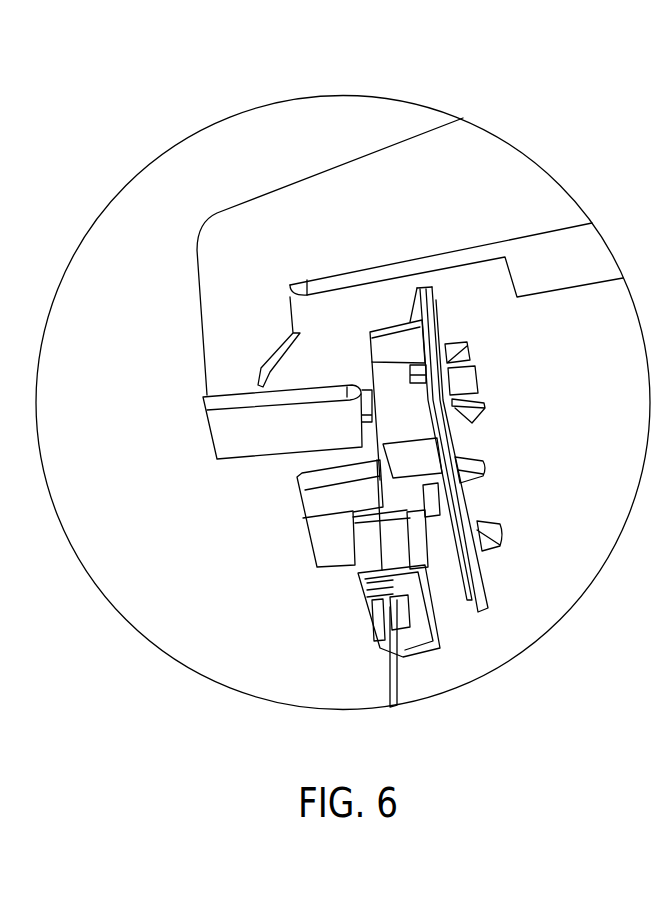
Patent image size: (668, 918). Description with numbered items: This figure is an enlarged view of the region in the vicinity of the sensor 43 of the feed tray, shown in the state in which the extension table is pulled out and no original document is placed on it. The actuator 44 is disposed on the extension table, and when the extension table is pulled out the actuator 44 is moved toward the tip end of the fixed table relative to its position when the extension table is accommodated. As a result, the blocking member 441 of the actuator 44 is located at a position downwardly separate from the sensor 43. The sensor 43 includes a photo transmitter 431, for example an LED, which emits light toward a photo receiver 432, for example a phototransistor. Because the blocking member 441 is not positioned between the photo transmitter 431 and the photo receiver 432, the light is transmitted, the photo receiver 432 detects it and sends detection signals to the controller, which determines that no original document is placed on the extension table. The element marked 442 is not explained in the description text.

The sensor 43 is at (438, 497).
The photo transmitter 431 is at (365, 393).
The photo receiver 432 is at (322, 498).
The actuator 44 is at (410, 213).
The blocking member 441 is at (240, 438).
The cover wall 442 is at (383, 190).